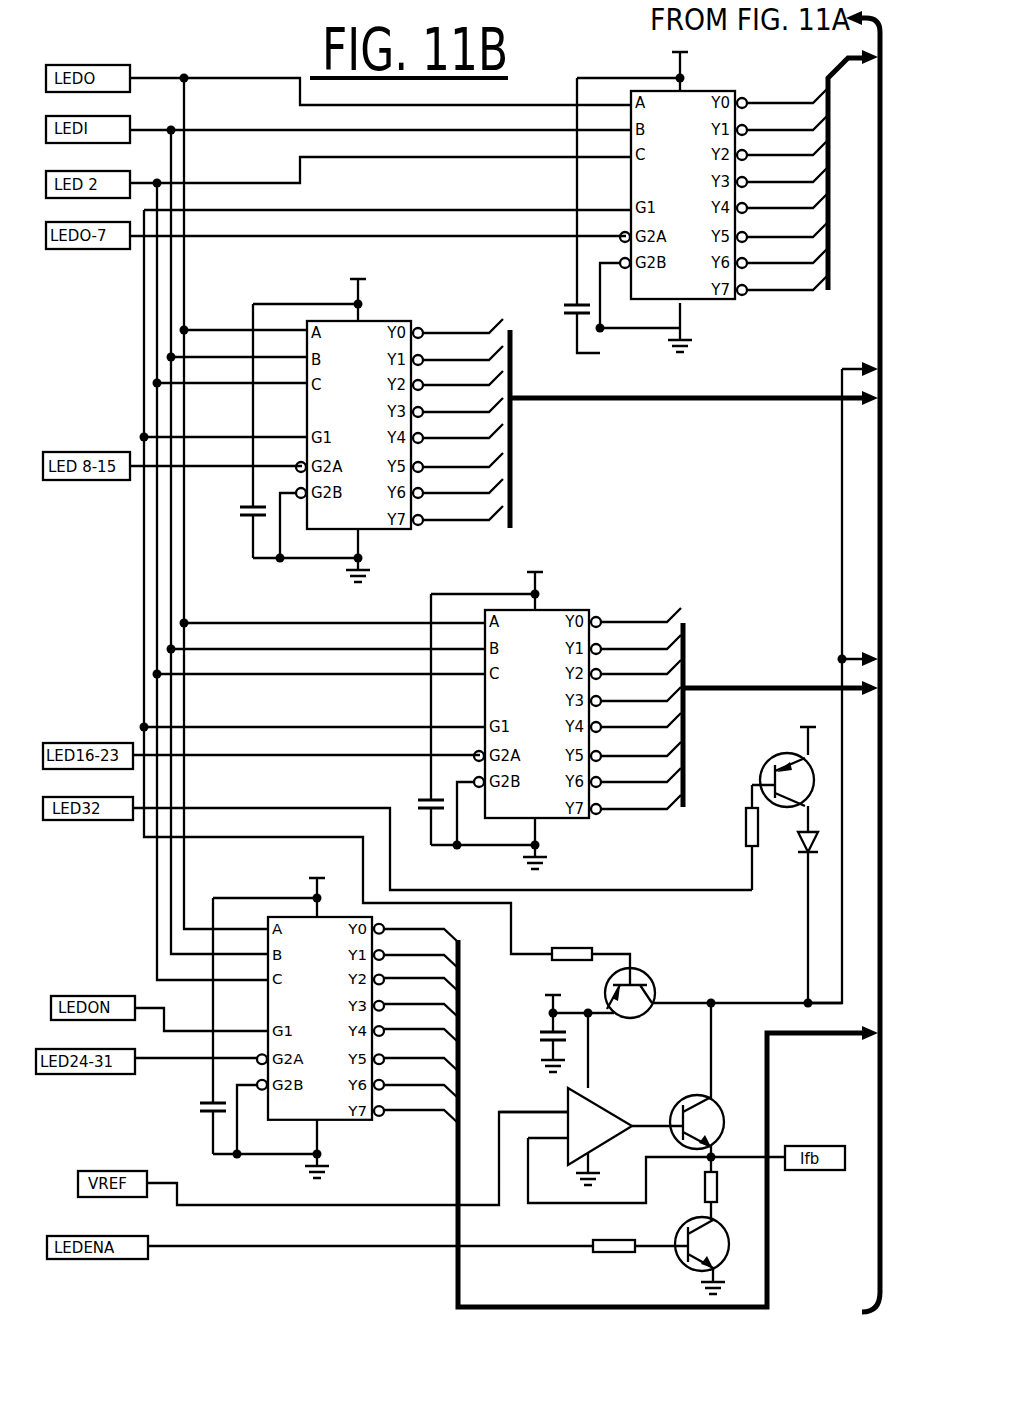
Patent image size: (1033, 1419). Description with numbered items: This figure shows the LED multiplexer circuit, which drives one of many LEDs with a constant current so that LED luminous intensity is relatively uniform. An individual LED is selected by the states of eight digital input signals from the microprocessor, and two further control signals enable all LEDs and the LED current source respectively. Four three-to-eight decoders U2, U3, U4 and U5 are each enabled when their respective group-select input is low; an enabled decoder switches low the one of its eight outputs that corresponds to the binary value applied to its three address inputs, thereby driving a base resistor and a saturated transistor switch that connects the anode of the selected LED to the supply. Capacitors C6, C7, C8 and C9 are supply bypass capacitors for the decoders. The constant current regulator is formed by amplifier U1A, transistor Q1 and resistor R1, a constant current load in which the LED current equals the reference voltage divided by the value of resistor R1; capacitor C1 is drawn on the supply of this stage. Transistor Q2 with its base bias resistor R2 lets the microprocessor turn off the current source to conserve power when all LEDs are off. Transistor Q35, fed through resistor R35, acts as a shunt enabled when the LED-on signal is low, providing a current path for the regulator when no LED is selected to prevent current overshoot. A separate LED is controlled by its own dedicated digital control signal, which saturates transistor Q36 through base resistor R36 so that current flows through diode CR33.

The 3-to-8 decoder U2 is at (702, 192).
The 3-to-8 decoder U3 is at (378, 420).
The 3-to-8 decoder U4 is at (556, 710).
The 3-to-8 decoder U5 is at (335, 1017).
The supply bypass capacitor C6 is at (561, 215).
The supply bypass capacitor C7 is at (237, 431).
The supply bypass capacitor C8 is at (422, 719).
The supply bypass capacitor C9 is at (201, 1026).
The transistor Q36 is at (763, 756).
The 10K resistor R36 is at (733, 837).
The diode CR33 is at (790, 907).
The resistor R35 is at (591, 955).
The transistor Q35 is at (696, 991).
The capacitor C1 is at (543, 1024).
The amplifier U1A is at (642, 1108).
The transistor Q1 is at (697, 1080).
The resistor R1 is at (692, 1188).
The transistor Q2 is at (689, 1255).
The base bias resistor R2 is at (634, 1263).